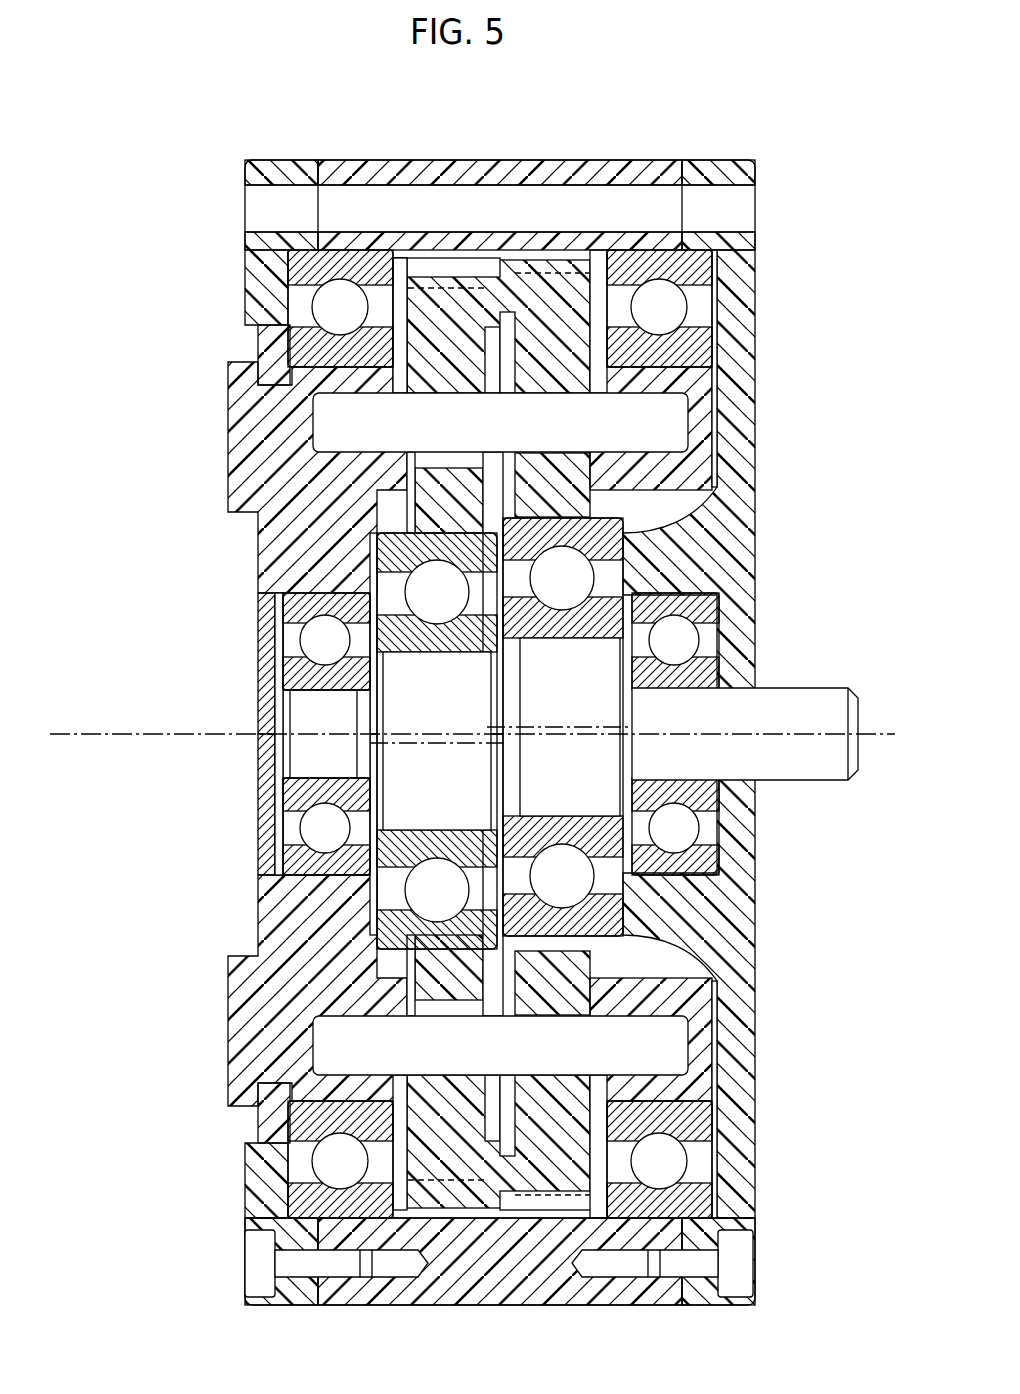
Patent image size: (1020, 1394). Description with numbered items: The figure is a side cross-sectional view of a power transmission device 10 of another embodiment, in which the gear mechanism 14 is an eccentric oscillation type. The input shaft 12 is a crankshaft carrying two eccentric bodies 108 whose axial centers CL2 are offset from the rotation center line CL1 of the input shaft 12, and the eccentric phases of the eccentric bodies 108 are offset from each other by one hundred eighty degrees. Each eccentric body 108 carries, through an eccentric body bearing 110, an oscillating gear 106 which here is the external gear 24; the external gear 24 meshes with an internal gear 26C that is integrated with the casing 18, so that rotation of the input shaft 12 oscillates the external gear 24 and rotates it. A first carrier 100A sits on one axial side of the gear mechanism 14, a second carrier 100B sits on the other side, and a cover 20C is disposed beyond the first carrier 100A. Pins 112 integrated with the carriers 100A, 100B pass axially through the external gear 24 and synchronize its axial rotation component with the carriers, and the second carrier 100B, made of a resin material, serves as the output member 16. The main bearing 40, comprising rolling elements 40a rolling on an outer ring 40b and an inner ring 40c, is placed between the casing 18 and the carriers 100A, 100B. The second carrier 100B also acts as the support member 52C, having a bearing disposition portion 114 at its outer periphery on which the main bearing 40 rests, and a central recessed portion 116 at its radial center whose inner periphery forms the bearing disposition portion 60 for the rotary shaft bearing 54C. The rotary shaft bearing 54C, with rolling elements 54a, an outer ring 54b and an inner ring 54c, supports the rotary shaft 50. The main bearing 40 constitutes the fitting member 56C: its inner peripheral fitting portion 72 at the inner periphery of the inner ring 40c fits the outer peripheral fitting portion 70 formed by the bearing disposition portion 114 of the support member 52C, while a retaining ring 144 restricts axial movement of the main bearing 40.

The power transmission device 10 is at (472, 702).
The input shaft 12 is at (746, 679).
The gear mechanism 14 is at (566, 260).
The output member 16 is at (229, 734).
The casing 18 is at (262, 158).
The cover 20C is at (735, 462).
The external gear 24 is at (510, 670).
The internal gear 26C is at (478, 300).
The main bearing 40 is at (447, 673).
The rolling elements 40a is at (325, 305).
The outer ring 40b is at (283, 270).
The inner ring 40c is at (272, 350).
The rotary shaft 50 is at (797, 688).
The support member 52C is at (229, 734).
The rotary shaft bearing 54C is at (423, 716).
The rolling elements 54a is at (312, 668).
The outer ring 54b is at (300, 600).
The inner ring 54c is at (330, 700).
The fitting member 56C is at (288, 241).
The bearing disposition portion 60 is at (268, 875).
The outer peripheral fitting portion 70 is at (367, 1117).
The inner peripheral fitting portion 72 is at (330, 1103).
The first carrier 100A is at (716, 734).
The second carrier 100B is at (229, 734).
The oscillating gear 106 is at (510, 670).
The eccentric bodies 108 is at (354, 741).
The eccentric body bearing 110 is at (440, 655).
The pins 112 is at (490, 432).
The bearing disposition portion 114 is at (305, 1129).
The central recessed portion 116 is at (290, 612).
The retaining ring 144 is at (270, 1120).
The rotation center line CL1 is at (822, 745).
The axial centers CL2 is at (440, 745).